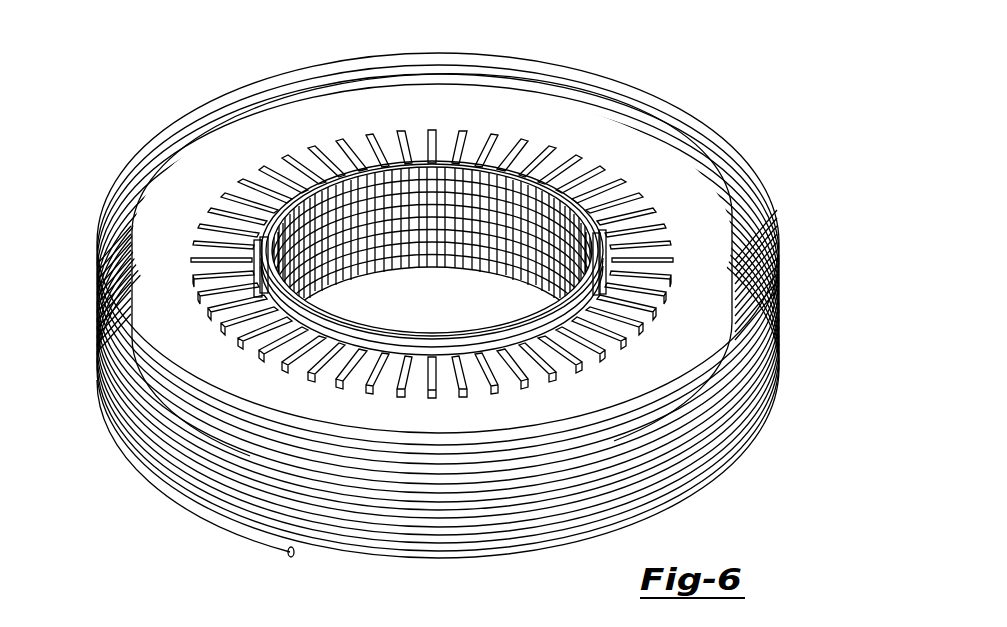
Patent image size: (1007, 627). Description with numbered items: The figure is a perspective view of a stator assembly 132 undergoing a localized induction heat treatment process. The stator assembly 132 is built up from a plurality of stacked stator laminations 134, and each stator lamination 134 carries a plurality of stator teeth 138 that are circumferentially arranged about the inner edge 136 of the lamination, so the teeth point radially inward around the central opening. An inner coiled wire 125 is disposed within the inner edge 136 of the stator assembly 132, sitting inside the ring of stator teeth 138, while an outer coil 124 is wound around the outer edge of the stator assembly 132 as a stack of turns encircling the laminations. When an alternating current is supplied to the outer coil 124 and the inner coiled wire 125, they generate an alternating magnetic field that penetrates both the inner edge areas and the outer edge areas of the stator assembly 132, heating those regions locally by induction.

The outer coil 124 is at (597, 84).
The inner coiled wire 125 is at (441, 158).
The stator assembly 132 is at (228, 170).
The stator lamination 134 is at (148, 341).
The inner edge 136 is at (262, 246).
The stator teeth 138 is at (622, 212).